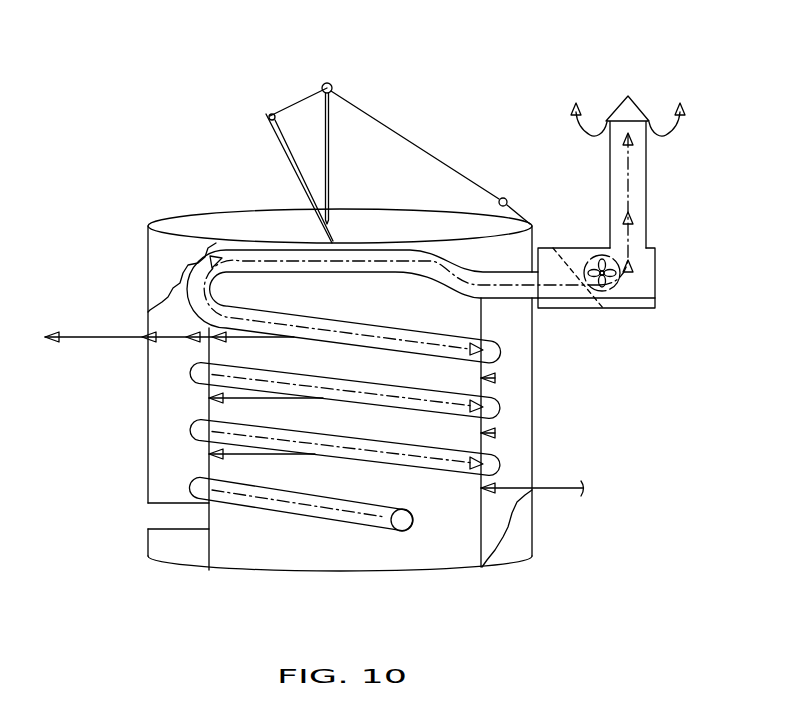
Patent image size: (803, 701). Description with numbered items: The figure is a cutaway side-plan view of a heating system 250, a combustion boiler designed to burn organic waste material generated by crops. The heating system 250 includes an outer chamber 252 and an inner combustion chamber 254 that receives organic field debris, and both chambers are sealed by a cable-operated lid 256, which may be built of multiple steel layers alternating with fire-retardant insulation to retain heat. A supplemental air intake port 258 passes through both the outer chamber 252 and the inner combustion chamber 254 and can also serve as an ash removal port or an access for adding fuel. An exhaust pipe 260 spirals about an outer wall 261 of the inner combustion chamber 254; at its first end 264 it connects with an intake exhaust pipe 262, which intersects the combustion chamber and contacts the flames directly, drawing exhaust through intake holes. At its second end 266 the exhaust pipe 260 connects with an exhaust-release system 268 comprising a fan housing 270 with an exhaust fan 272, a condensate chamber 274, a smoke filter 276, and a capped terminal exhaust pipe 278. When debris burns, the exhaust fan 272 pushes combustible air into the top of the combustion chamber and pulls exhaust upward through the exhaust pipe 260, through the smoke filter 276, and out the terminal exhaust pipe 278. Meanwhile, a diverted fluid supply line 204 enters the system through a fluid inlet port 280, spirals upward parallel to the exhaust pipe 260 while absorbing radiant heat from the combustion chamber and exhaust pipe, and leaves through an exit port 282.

The diverted fluid supply line 204 is at (445, 483).
The heating system 250 is at (443, 90).
The outer chamber 252 is at (518, 439).
The inner combustion chamber 254 is at (453, 327).
The cable-operated lid 256 is at (279, 148).
The supplemental air intake port 258 is at (162, 517).
The exhaust pipe 260 is at (193, 373).
The outer wall 261 is at (291, 549).
The intake exhaust pipe 262 is at (406, 531).
The first end 264 is at (368, 518).
The second end 266 is at (502, 272).
The exhaust-release system 268 is at (653, 200).
The fan housing 270 is at (647, 275).
The exhaust fan 272 is at (592, 262).
The condensate chamber 274 is at (618, 303).
The smoke filter 276 is at (560, 252).
The capped terminal exhaust pipe 278 is at (633, 160).
The fluid inlet port 280 is at (532, 492).
The exit port 282 is at (145, 337).